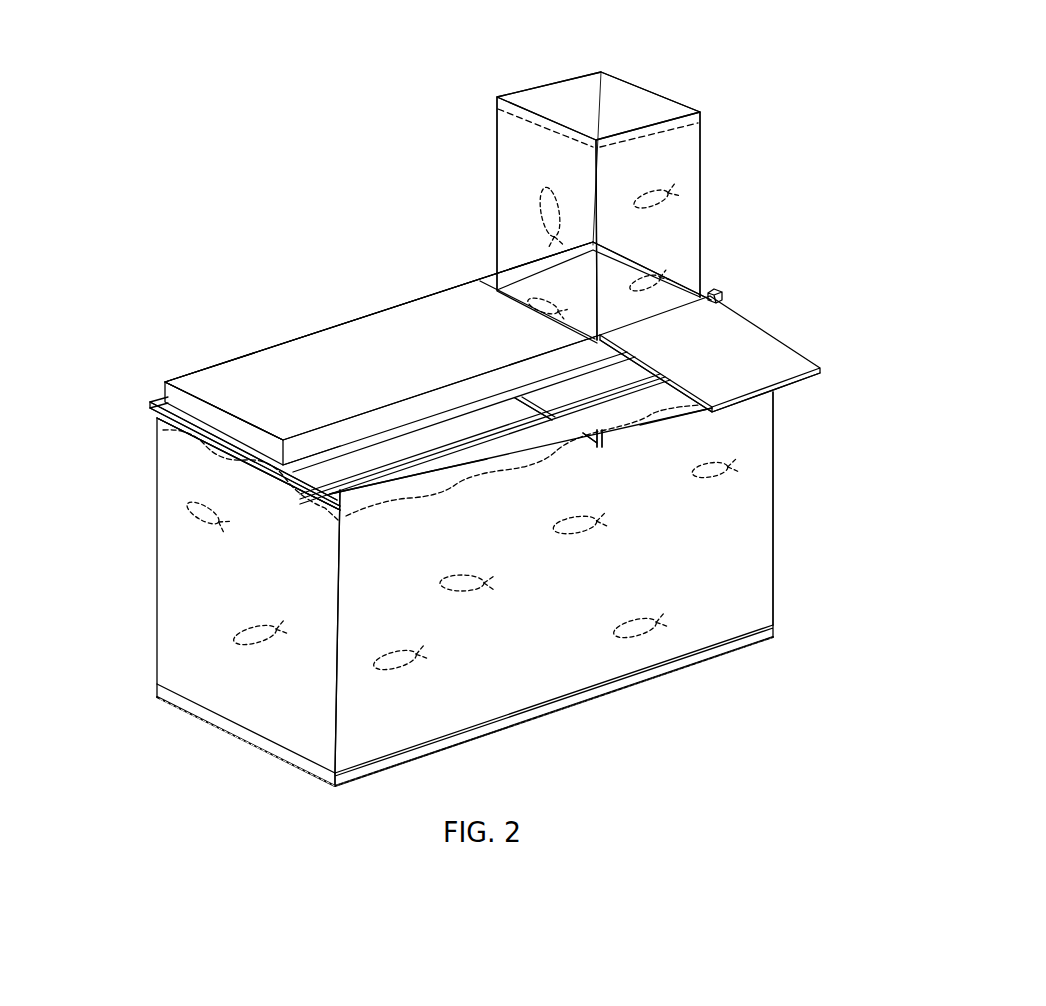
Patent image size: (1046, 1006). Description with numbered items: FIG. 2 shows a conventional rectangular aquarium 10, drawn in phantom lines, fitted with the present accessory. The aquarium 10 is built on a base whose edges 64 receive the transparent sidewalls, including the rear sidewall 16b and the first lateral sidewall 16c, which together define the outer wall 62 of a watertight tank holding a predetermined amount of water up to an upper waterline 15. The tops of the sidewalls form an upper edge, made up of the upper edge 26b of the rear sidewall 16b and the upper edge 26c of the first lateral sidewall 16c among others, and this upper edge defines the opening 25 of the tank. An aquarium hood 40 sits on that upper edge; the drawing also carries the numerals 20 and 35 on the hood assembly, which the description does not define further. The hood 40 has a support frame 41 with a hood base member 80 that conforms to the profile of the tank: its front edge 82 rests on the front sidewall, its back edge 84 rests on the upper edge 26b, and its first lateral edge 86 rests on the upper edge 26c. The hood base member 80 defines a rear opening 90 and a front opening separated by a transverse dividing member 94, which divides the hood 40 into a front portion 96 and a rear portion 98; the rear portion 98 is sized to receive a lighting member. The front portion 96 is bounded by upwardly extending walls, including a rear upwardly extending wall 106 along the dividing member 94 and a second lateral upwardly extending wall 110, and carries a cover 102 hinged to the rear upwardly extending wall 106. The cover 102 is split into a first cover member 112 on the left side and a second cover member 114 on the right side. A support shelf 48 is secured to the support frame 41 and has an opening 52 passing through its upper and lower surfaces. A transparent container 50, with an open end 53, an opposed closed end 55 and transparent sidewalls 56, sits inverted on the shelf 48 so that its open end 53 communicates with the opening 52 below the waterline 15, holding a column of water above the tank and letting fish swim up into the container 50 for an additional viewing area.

The aquarium 10 is at (274, 793).
The upper waterline 15 is at (270, 487).
The rear sidewall 16b is at (592, 660).
The first lateral sidewall 16c is at (168, 645).
The lid 20 is at (260, 368).
The opening 25 is at (342, 470).
The upper edge of rear sidewall 26b is at (487, 480).
The upper edge of first lateral sidewall 26c is at (205, 437).
The rail 35 is at (396, 450).
The aquarium hood 40 is at (414, 319).
The support frame 41 is at (347, 492).
The support shelf 48 is at (625, 375).
The transparent container 50 is at (670, 98).
The opening 52 is at (577, 400).
The open end 53 is at (457, 192).
The closed end 55 is at (637, 100).
The transparent sidewalls 56 is at (658, 227).
The outer wall 62 is at (748, 548).
The edges 64 is at (322, 770).
The hood base member 80 is at (431, 480).
The front edge 82 is at (158, 415).
The back edge 84 is at (555, 427).
The first lateral edge 86 is at (260, 456).
The rear opening 90 is at (478, 423).
The transverse dividing member 94 is at (496, 407).
The front portion 96 is at (152, 410).
The rear portion 98 is at (713, 409).
The cover 102 is at (213, 380).
The rear upwardly extending wall 106 is at (312, 452).
The second lateral upwardly extending wall 110 is at (232, 432).
The first cover member 112 is at (361, 347).
The second cover member 114 is at (735, 340).